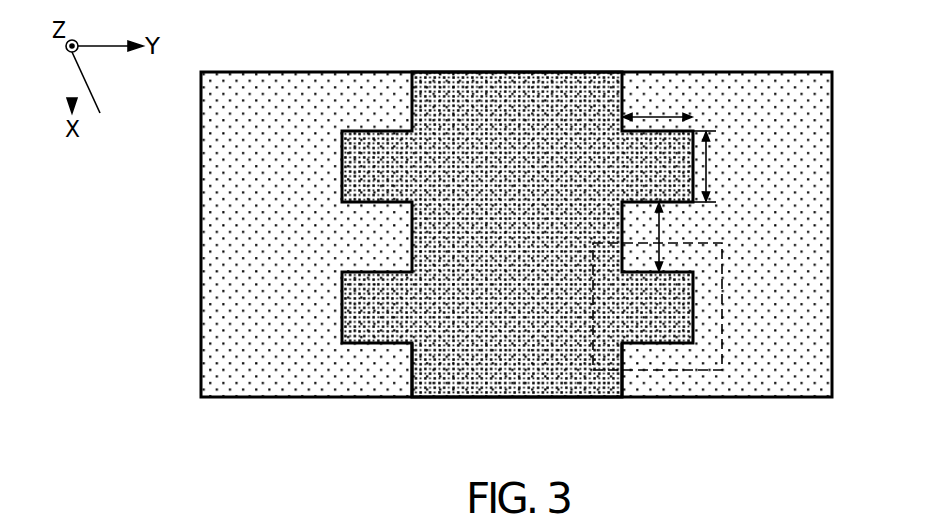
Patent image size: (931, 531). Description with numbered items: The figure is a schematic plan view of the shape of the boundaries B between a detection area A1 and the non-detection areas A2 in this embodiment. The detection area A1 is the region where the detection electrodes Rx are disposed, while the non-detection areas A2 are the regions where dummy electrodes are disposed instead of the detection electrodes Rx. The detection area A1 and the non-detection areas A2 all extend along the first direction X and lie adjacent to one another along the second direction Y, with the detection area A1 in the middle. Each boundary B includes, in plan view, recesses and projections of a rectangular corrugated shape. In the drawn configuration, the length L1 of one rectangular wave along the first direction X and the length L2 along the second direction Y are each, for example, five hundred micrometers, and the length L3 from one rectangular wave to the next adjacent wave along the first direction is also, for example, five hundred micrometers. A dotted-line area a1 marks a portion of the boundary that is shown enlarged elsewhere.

The detection area A1 is at (622, 63).
The non-detection area A2 is at (412, 63).
The detection electrode Rx is at (523, 372).
The boundary B is at (411, 374).
The area encircled by dotted lines a1 is at (702, 371).
The length of one rectangular waveform along the first direction L1 is at (711, 167).
The length of one rectangular waveform along the second direction L2 is at (664, 103).
The length between rectangular waves L3 is at (672, 226).